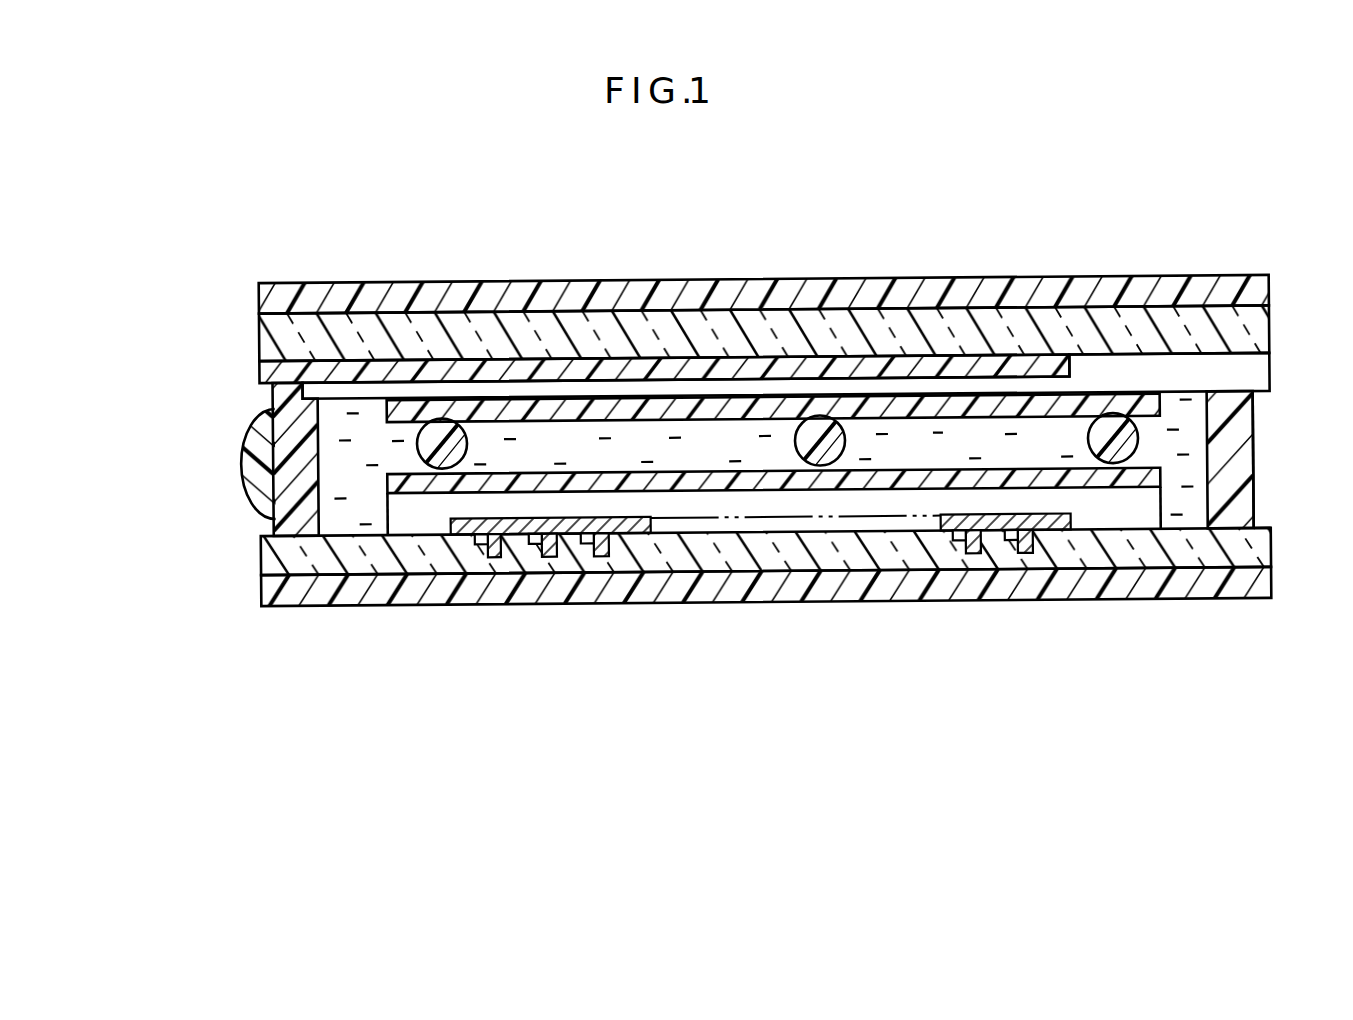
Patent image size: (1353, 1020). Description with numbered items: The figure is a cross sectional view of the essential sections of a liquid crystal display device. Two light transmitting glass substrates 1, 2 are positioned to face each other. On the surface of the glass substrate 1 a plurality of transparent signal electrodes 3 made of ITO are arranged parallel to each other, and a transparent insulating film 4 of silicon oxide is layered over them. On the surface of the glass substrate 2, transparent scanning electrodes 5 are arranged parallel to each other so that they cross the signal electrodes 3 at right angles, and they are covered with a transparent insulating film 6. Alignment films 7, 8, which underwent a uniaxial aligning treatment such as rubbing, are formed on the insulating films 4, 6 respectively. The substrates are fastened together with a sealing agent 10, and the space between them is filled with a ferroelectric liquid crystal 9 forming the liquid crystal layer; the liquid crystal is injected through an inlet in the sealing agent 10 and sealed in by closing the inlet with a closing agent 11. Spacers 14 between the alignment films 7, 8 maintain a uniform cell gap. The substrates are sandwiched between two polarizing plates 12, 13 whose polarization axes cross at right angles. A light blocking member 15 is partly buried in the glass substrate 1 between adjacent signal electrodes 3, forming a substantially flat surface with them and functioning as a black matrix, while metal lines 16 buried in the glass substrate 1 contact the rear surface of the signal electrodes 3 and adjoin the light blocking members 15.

The glass substrate 1 is at (1258, 557).
The glass substrate 2 is at (1260, 332).
The signal electrode 3 is at (482, 548).
The insulating film 4 is at (1132, 535).
The scanning electrode 5 is at (268, 368).
The insulating film 6 is at (1255, 381).
The alignment film 7 is at (1160, 480).
The alignment film 8 is at (1165, 403).
The ferroelectric liquid crystal 9 is at (1188, 452).
The sealing agent 10 is at (285, 508).
The closing agent 11 is at (250, 458).
The polarizing plate 12 is at (1257, 591).
The polarizing plate 13 is at (1270, 281).
The spacer 14 is at (440, 431).
The light blocking member 15 is at (525, 541).
The metal line 16 is at (480, 540).